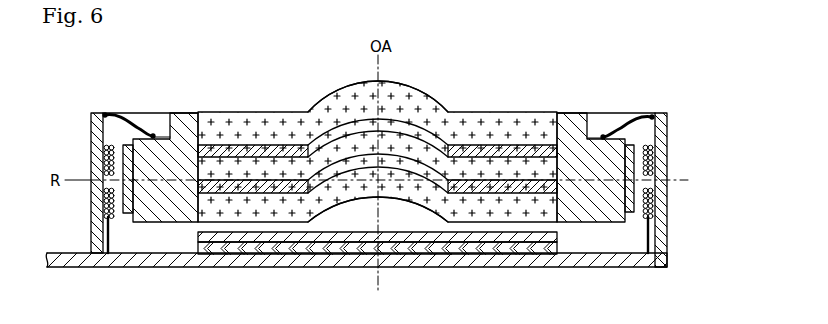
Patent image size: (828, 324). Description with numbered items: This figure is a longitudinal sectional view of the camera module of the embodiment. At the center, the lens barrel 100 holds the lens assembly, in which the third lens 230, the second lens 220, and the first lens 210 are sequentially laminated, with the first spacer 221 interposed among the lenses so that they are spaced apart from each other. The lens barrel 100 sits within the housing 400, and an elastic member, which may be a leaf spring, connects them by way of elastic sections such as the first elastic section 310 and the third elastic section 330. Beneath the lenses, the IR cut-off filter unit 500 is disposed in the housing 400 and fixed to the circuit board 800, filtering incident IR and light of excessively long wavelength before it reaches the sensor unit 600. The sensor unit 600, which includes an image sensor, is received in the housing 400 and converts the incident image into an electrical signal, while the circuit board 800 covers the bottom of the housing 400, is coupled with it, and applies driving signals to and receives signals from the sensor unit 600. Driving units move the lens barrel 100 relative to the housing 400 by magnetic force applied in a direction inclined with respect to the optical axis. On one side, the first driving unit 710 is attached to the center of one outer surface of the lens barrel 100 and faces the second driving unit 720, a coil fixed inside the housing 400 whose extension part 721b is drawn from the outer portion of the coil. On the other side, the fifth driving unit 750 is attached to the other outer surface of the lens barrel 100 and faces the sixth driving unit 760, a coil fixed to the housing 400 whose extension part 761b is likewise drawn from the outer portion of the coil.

The lens barrel 100 is at (572, 122).
The first lens 210 is at (407, 92).
The second lens 220 is at (273, 165).
The first spacer 221 is at (226, 188).
The third lens 230 is at (342, 188).
The first elastic section 310 is at (138, 122).
The third elastic section 330 is at (613, 133).
The housing 400 is at (662, 211).
The IR cut-off filter unit 500 is at (438, 242).
The sensor unit 600 is at (495, 250).
The first driving unit 710 is at (628, 213).
The second driving unit 720 is at (652, 163).
The extension part 721b is at (648, 258).
The fifth driving unit 750 is at (125, 212).
The sixth driving unit 760 is at (104, 210).
The extension part 761b is at (110, 258).
The circuit board 800 is at (236, 267).